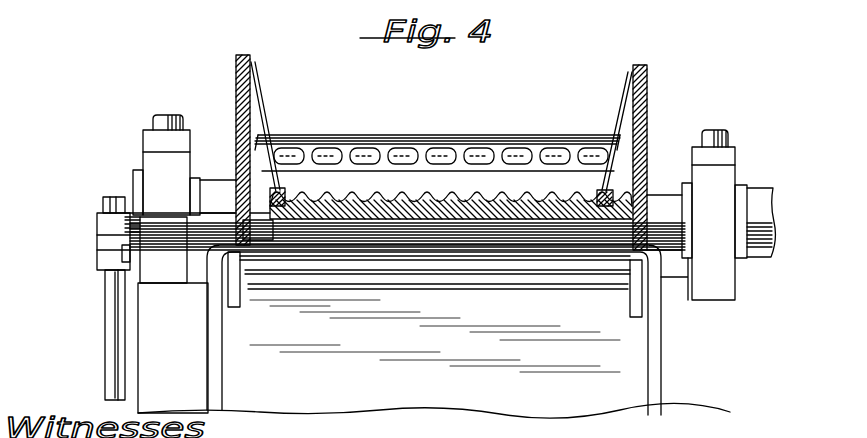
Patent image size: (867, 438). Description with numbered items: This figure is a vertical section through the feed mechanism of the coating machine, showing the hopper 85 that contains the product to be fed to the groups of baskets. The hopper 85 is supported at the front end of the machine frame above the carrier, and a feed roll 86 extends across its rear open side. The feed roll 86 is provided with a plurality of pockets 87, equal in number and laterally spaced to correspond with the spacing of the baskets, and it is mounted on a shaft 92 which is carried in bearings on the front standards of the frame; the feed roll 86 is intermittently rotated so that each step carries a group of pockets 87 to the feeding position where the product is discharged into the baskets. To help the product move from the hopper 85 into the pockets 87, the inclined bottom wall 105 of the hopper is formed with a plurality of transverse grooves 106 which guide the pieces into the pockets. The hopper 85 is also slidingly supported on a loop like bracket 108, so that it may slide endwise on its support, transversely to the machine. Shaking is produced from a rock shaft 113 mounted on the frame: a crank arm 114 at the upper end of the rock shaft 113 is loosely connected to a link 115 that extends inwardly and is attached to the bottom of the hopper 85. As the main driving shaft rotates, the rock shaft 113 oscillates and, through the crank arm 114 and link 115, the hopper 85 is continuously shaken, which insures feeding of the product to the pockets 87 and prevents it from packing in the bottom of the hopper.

The hopper 85 is at (648, 108).
The feed roll 86 is at (497, 143).
The pockets 87 is at (558, 158).
The shaft 92 is at (658, 197).
The inclined bottom wall 105 is at (550, 212).
The transverse grooves 106 is at (468, 215).
The loop like bracket 108 is at (662, 331).
The rock shaft 113 is at (93, 327).
The crank arm 114 is at (78, 236).
The link 115 is at (212, 215).